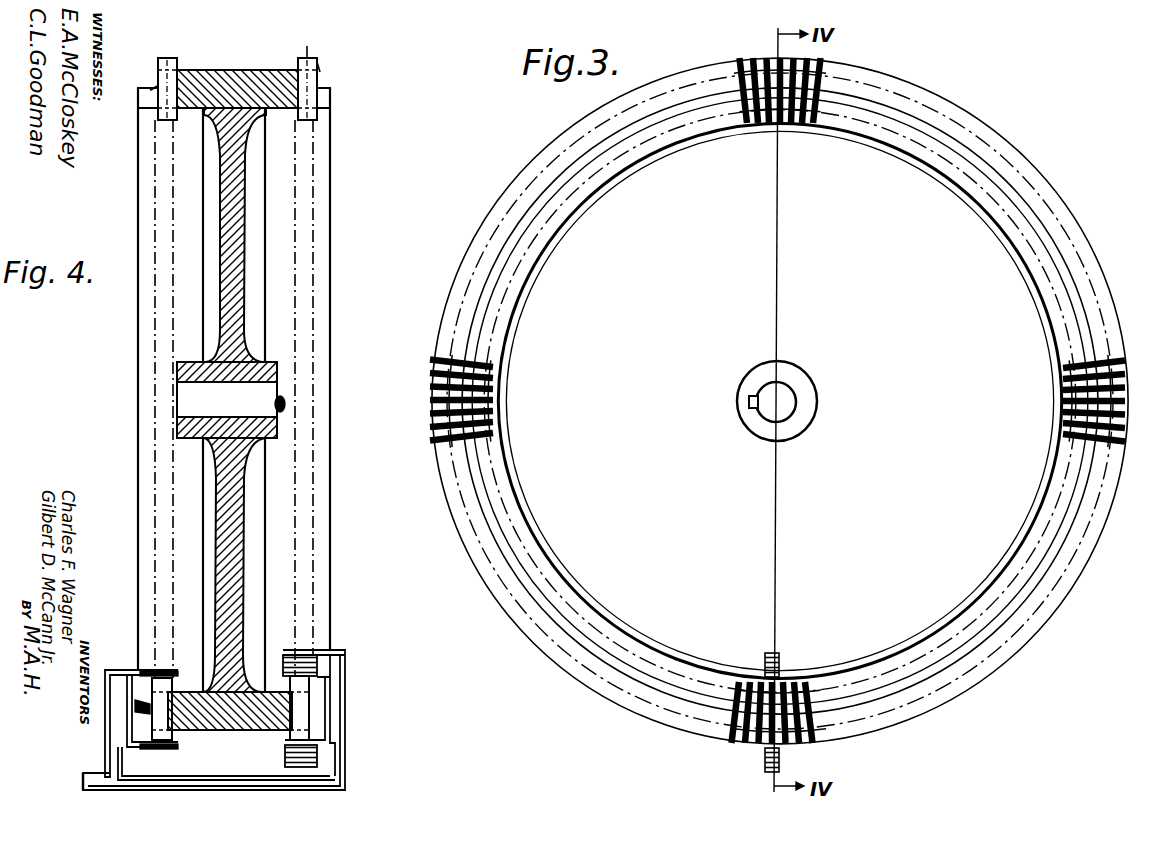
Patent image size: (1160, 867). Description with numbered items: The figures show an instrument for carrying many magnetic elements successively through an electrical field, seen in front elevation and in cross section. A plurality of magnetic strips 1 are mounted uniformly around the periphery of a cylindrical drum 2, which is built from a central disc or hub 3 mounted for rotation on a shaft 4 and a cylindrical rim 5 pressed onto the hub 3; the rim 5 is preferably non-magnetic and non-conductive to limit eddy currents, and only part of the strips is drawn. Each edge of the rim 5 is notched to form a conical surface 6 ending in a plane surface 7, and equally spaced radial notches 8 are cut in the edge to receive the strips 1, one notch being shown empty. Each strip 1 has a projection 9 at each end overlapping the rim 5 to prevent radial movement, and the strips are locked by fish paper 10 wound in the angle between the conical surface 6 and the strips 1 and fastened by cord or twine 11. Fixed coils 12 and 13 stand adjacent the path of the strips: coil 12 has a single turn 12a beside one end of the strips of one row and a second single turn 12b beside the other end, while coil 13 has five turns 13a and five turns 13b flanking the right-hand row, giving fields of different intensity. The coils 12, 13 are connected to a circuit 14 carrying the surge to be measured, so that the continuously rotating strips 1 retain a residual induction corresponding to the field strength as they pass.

In FIG. 4, the magnetic strips 1 is at (318, 68).
In FIG. 3, the magnetic strips 1 is at (751, 124).
In FIG. 4, the cylindrical drum 2 is at (138, 355).
In FIG. 4, the central disc or hub 3 is at (237, 282).
In FIG. 4, the shaft 4 is at (185, 408).
In FIG. 3, the shaft 4 is at (790, 398).
In FIG. 4, the cylindrical rim 5 is at (222, 71).
In FIG. 4, the conical surface 6 is at (332, 91).
In FIG. 4, the plane surface 7 is at (320, 80).
In FIG. 4, the radial notches 8 is at (308, 41).
In FIG. 3, the radial notches 8 is at (826, 80).
In FIG. 4, the projection 9 is at (297, 60).
In FIG. 4, the fish paper 10 is at (150, 88).
In FIG. 4, the cord or twine 11 is at (157, 86).
In FIG. 4, the coil 12 is at (104, 692).
In FIG. 4, the single turn 12a is at (177, 672).
In FIG. 4, the second single turn 12b is at (175, 745).
In FIG. 4, the coil 13 is at (345, 711).
In FIG. 4, the turns 13a is at (288, 662).
In FIG. 3, the turns 13a is at (781, 660).
In FIG. 4, the turns 13b is at (285, 757).
In FIG. 3, the turns 13b is at (781, 760).
In FIG. 4, the circuit 14 is at (90, 770).